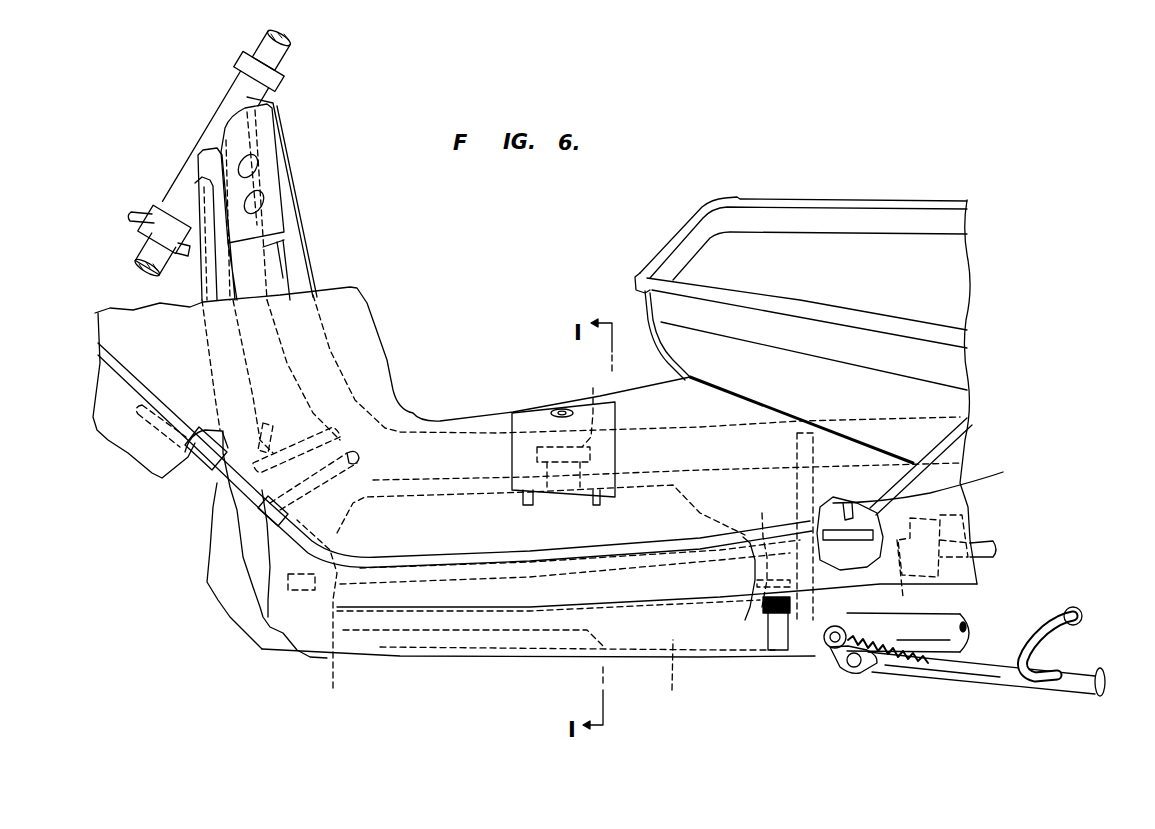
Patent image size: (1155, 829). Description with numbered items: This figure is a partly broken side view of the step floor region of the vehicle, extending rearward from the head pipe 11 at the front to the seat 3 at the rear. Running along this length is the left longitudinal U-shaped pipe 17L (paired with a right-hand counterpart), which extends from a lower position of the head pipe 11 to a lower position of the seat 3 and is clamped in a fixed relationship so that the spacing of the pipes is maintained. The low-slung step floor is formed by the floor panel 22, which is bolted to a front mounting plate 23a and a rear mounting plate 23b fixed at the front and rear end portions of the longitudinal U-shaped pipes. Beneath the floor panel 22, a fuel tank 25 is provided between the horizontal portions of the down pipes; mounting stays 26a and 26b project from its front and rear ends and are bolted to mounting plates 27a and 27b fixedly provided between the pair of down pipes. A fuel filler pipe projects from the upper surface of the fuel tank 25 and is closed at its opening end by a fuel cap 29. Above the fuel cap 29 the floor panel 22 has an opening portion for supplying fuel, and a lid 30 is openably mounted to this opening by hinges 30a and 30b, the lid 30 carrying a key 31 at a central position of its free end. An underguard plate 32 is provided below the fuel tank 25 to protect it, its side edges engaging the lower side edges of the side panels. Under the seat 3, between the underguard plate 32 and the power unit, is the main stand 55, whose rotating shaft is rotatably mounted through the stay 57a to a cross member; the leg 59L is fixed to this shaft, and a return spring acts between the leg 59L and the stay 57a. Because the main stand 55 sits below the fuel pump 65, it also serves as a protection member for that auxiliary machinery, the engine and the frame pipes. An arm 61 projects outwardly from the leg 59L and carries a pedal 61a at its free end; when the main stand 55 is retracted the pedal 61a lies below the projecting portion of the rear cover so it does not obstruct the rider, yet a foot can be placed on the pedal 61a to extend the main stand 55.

The head pipe 11 is at (206, 128).
The floor panel 22 is at (368, 329).
The longitudinal U-shaped pipe 17L is at (214, 595).
The underguard plate 32 is at (500, 658).
The mounting plate 23a is at (198, 467).
The mounting plate 23b is at (930, 515).
The seat 3 is at (826, 190).
The lid 30 is at (517, 415).
The key 31 is at (562, 409).
The fuel cap 29 is at (566, 428).
The hinge 30a is at (603, 503).
The hinge 30b is at (527, 504).
The fuel tank 25 is at (673, 678).
The mounting stay 26a is at (273, 483).
The mounting stay 26b is at (760, 535).
The mounting plate 27a is at (328, 616).
The mounting plate 27b is at (767, 655).
The fuel pump 65 is at (965, 516).
The stay 57a is at (840, 668).
The leg 59L is at (950, 680).
The main stand 55 is at (907, 677).
The arm 61 is at (1022, 640).
The pedal 61a is at (1065, 610).